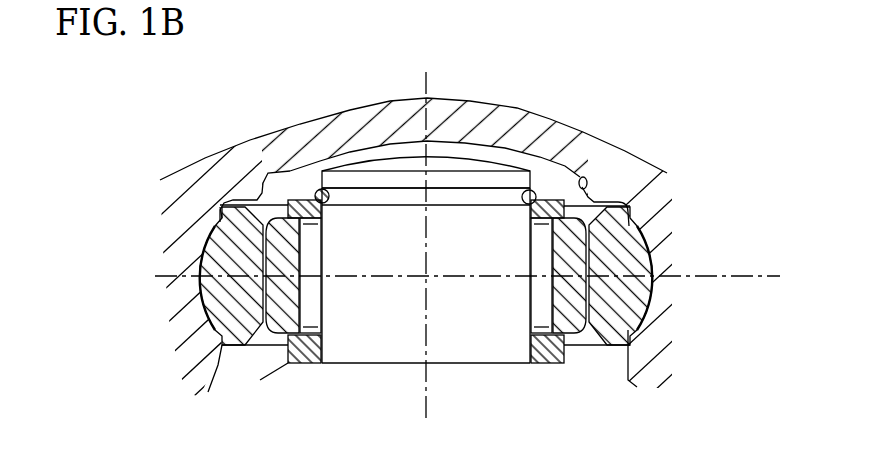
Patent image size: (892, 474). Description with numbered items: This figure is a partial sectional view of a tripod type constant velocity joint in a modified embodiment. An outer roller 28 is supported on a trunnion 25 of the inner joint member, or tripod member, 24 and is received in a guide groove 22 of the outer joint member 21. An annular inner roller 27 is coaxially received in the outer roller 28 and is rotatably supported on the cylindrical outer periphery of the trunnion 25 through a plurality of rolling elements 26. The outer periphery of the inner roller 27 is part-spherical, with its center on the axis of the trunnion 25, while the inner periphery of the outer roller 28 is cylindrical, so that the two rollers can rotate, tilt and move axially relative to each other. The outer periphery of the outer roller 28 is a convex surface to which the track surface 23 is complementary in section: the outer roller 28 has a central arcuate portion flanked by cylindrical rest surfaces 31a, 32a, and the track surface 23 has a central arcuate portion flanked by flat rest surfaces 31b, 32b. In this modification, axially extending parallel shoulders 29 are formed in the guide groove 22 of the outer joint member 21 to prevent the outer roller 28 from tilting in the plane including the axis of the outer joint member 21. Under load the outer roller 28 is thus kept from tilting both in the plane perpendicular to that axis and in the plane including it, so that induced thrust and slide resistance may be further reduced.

The outer joint member 21 is at (401, 97).
The guide groove 22 is at (451, 147).
The track surface 23 is at (203, 262).
The inner joint member 24 is at (563, 364).
The trunnion 25 is at (443, 340).
The rolling elements 26 is at (510, 340).
The inner roller 27 is at (567, 233).
The outer roller 28 is at (643, 300).
The shoulders 29 is at (589, 160).
The rest surface 31a is at (245, 205).
The rest surface 31b is at (215, 205).
The rest surface 32a is at (233, 347).
The rest surface 32b is at (218, 337).